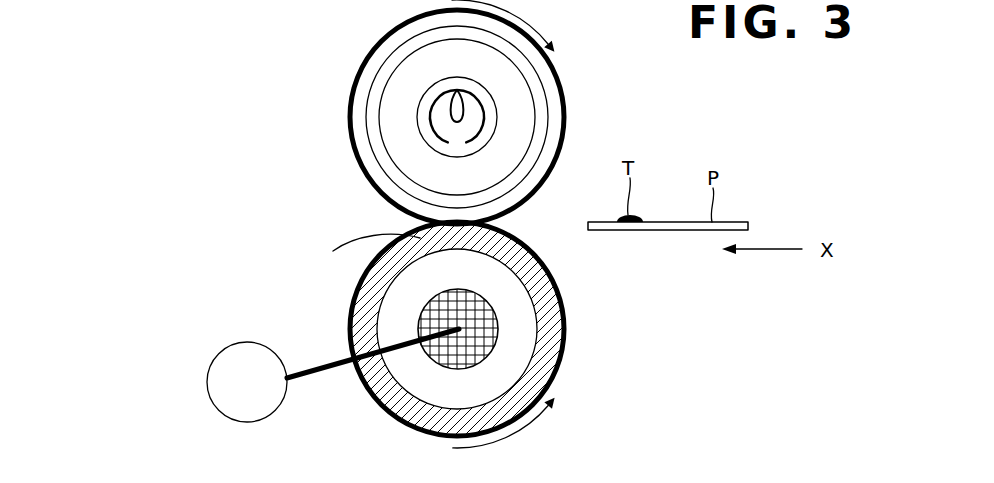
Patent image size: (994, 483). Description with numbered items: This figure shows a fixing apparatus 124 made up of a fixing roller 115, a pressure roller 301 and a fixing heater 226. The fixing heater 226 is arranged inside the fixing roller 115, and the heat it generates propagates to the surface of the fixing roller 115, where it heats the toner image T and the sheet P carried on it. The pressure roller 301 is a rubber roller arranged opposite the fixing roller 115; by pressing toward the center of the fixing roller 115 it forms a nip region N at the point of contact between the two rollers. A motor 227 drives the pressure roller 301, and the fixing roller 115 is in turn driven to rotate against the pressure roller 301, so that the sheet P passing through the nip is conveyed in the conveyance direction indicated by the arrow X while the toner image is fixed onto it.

The fixing apparatus 124 is at (232, 157).
The fixing roller 115 is at (563, 85).
The fixing heater 226 is at (430, 98).
The pressure roller 301 is at (564, 305).
The motor 227 is at (247, 342).